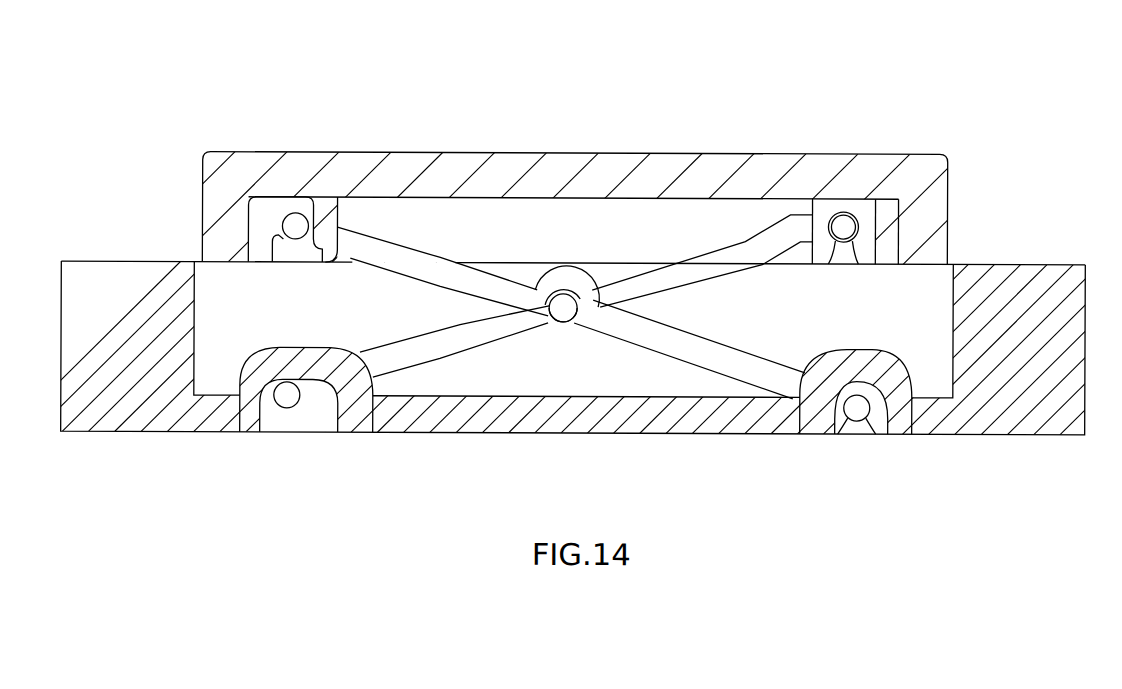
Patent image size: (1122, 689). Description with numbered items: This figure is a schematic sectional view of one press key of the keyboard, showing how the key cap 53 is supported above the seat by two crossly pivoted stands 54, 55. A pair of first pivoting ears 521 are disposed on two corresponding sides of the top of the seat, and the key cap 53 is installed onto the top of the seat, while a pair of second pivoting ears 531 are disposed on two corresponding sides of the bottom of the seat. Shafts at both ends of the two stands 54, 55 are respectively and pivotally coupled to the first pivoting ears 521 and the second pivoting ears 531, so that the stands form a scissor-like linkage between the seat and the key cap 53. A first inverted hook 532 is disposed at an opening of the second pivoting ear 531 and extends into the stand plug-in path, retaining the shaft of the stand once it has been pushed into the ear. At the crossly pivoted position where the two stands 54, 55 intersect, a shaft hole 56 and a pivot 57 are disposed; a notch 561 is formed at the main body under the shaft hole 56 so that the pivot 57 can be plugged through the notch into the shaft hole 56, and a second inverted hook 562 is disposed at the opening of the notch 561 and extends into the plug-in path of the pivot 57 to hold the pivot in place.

The key cap 53 is at (538, 178).
The second pivoting ear 531 is at (321, 246).
The first inverted hook 532 is at (273, 238).
The first pivoting ear 521 is at (297, 368).
The stand 54 is at (427, 270).
The stand 55 is at (443, 343).
The shaft hole 56 is at (583, 280).
The pivot 57 is at (585, 308).
The notch 561 is at (563, 324).
The second inverted hook 562 is at (572, 324).